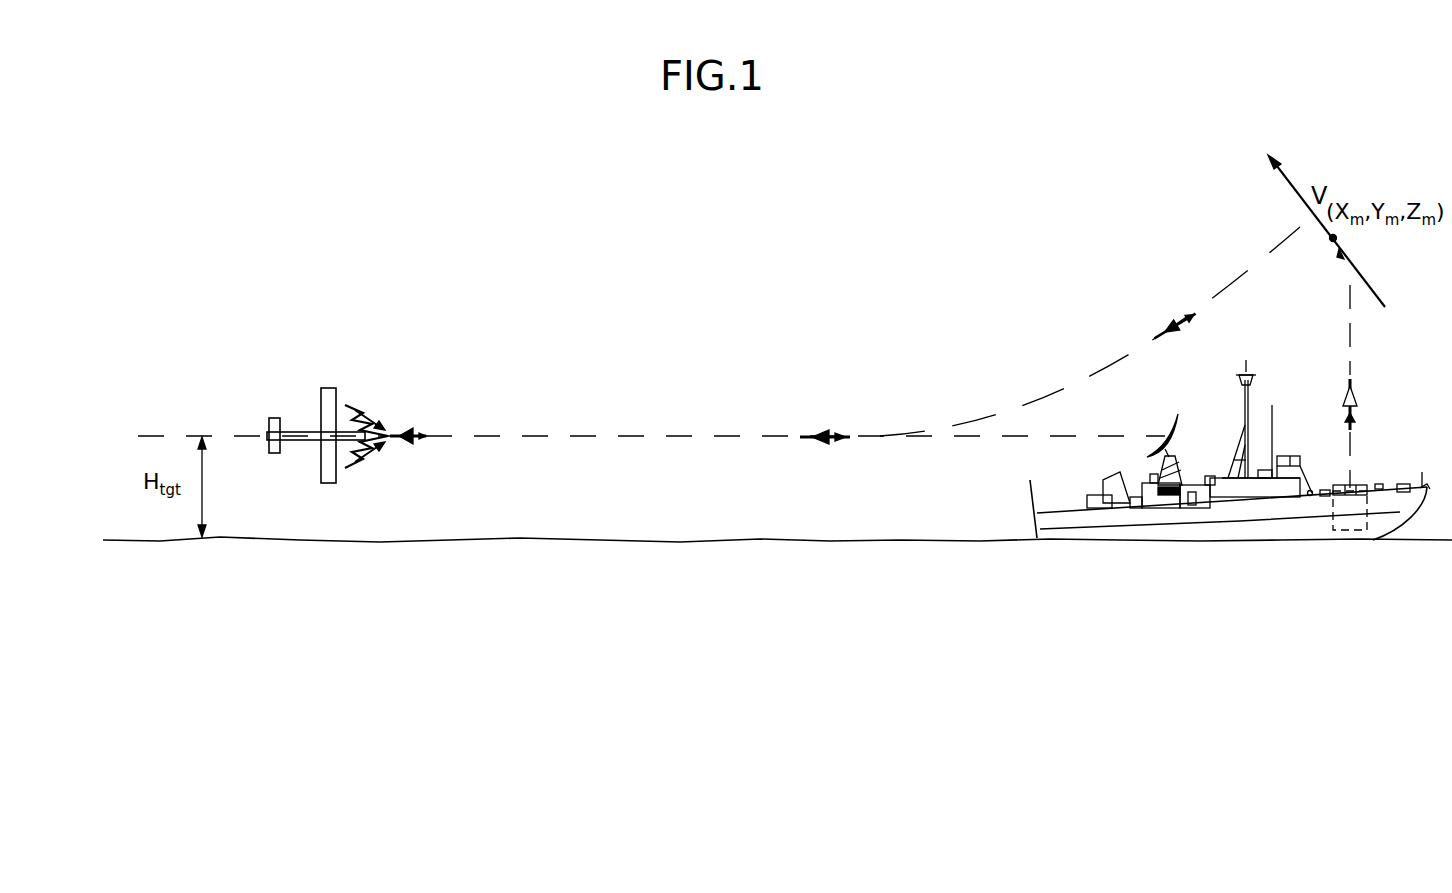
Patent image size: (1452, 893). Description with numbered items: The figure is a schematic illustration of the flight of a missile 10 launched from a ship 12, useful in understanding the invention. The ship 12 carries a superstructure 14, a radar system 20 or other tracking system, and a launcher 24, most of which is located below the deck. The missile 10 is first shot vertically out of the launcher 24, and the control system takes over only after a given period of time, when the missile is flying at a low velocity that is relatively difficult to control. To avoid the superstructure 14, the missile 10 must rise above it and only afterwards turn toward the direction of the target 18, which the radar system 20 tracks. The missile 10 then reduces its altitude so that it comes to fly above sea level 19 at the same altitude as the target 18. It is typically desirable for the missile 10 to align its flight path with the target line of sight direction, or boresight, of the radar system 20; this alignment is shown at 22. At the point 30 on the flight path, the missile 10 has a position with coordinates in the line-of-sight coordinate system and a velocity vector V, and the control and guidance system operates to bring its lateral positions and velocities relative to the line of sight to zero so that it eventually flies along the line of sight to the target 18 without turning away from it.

The missile 10 is at (404, 431).
The ship 12 is at (1401, 512).
The superstructure 14 is at (1247, 364).
The target 18 is at (308, 432).
The sea level 19 is at (810, 539).
The radar system 20 is at (1177, 432).
The alignment 22 is at (827, 430).
The launcher 24 is at (1368, 488).
The point 30 is at (1332, 240).